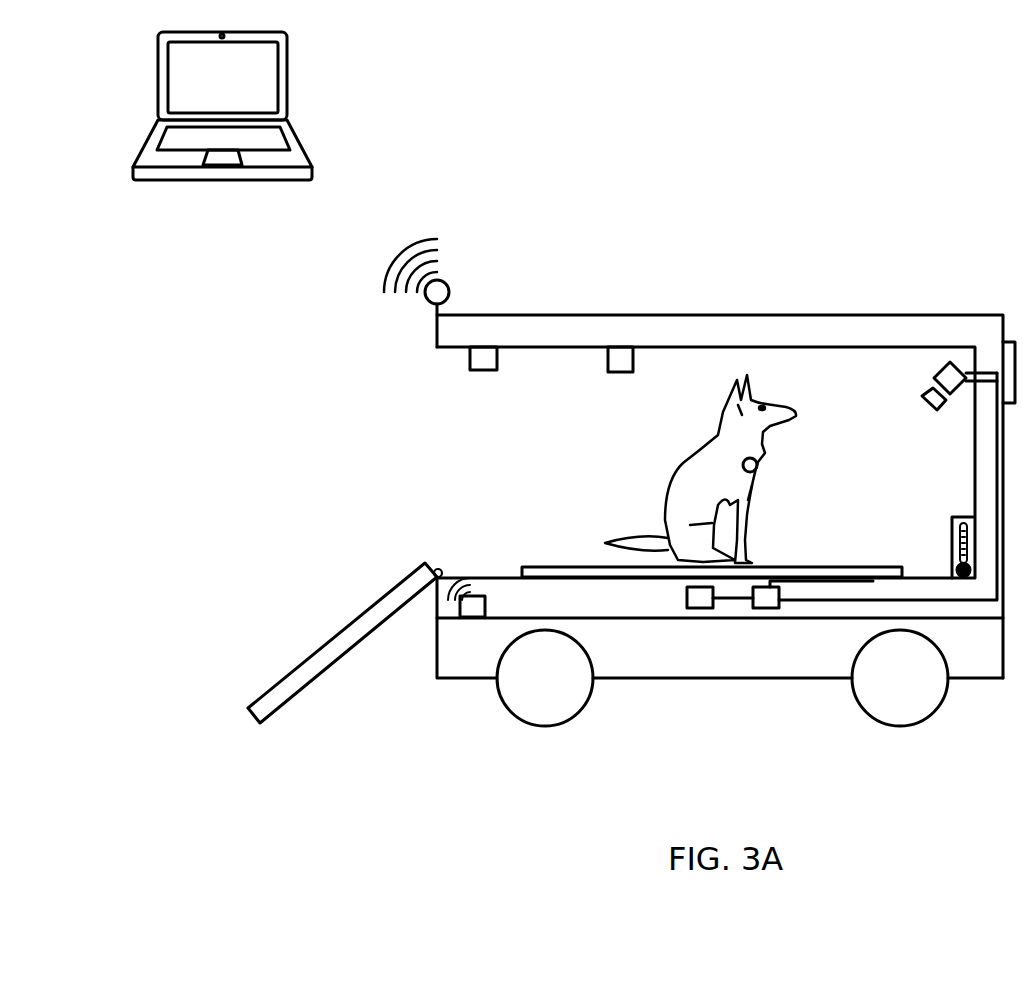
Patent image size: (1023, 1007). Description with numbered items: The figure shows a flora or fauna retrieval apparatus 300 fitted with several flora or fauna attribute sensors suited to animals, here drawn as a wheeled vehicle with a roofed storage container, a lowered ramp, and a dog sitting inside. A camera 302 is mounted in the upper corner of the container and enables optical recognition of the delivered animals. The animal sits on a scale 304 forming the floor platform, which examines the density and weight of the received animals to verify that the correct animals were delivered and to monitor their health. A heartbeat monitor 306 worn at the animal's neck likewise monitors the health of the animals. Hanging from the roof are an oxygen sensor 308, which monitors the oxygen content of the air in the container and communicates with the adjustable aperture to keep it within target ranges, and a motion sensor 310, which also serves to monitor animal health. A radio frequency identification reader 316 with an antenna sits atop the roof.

The animal transport vehicle 300 is at (596, 196).
The camera 302 is at (930, 378).
The scale 304 is at (848, 566).
The heartbeat monitor 306 is at (757, 465).
The oxygen sensor 308 is at (497, 362).
The motion sensor 310 is at (633, 360).
The radio frequency identification reader 316 is at (449, 292).